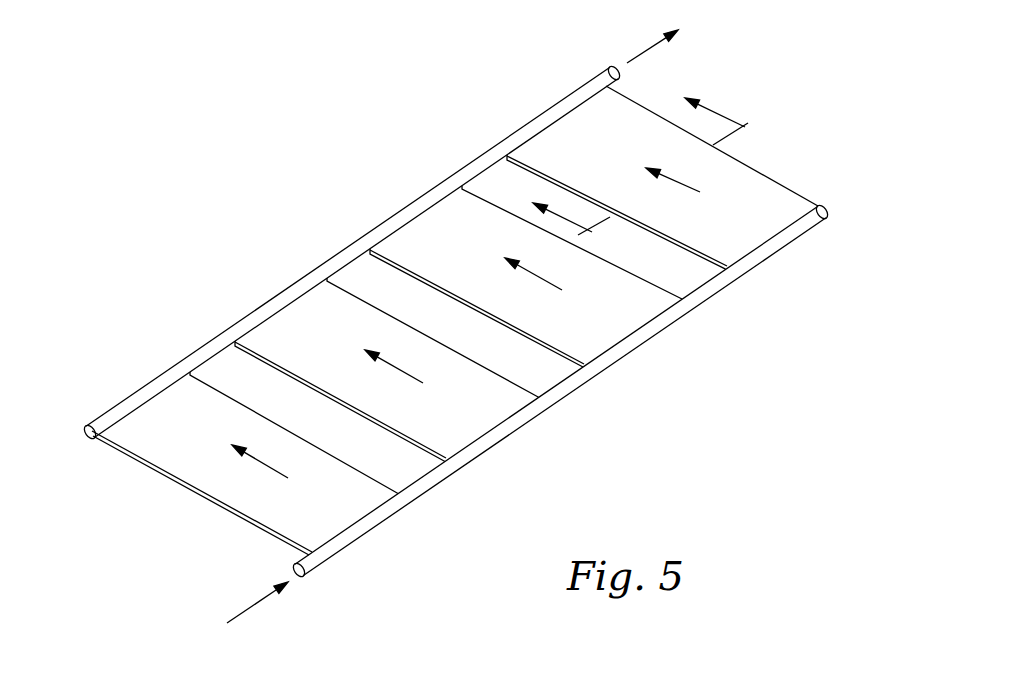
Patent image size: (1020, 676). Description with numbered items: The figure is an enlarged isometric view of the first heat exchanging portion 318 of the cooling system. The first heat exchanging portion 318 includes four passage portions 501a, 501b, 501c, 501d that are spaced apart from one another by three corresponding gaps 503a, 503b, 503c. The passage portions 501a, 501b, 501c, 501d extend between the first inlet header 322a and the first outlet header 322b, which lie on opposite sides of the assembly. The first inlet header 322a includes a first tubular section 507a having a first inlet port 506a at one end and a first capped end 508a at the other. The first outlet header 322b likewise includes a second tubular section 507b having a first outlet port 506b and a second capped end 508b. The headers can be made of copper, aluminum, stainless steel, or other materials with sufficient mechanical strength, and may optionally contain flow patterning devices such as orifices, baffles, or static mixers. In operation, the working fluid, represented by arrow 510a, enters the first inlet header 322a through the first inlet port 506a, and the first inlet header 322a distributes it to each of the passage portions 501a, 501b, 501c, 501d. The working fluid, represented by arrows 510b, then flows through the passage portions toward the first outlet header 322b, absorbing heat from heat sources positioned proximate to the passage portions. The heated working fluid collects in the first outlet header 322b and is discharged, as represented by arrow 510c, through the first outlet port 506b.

The first heat exchanging portion 318 is at (801, 142).
The first inlet header 322a is at (447, 512).
The first outlet header 322b is at (341, 210).
The passage portion 501a is at (145, 427).
The passage portion 501b is at (280, 335).
The passage portion 501c is at (446, 220).
The passage portion 501d is at (590, 125).
The gap 503a is at (227, 372).
The gap 503b is at (362, 282).
The gap 503c is at (502, 162).
The first inlet port 506a is at (300, 578).
The first outlet port 506b is at (620, 63).
The first tubular section 507a is at (587, 400).
The second tubular section 507b is at (350, 252).
The first capped end 508a is at (829, 206).
The second capped end 508b is at (86, 430).
The arrow 510a is at (238, 607).
The arrows 510b is at (262, 468).
The arrow 510c is at (645, 60).